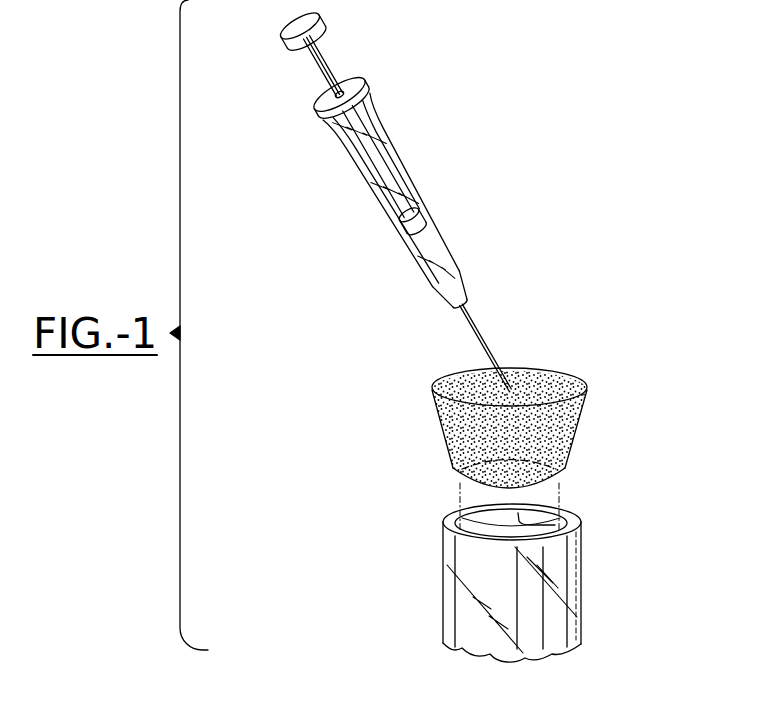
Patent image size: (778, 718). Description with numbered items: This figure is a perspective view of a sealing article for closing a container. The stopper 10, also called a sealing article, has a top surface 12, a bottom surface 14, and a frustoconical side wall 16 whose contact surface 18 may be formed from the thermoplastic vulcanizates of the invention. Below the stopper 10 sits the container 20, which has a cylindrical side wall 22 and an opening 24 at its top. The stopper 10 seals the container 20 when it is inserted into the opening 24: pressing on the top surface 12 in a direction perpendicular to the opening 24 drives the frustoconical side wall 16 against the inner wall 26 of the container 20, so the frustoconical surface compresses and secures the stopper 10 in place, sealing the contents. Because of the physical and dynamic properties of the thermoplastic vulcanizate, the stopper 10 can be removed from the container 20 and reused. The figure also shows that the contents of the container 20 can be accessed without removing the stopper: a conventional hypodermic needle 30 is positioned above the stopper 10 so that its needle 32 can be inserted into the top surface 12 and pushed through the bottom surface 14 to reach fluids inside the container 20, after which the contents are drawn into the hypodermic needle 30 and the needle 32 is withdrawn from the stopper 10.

The stopper 10 is at (468, 497).
The top surface 12 is at (553, 418).
The bottom surface 14 is at (533, 488).
The frustoconical side wall 16 is at (582, 413).
The contact surface 18 is at (547, 446).
The container 20 is at (470, 580).
The cylindrical side wall 22 is at (582, 582).
The opening 24 is at (487, 527).
The inner wall 26 is at (555, 525).
The hypodermic needle 30 is at (393, 242).
The needle 32 is at (483, 333).